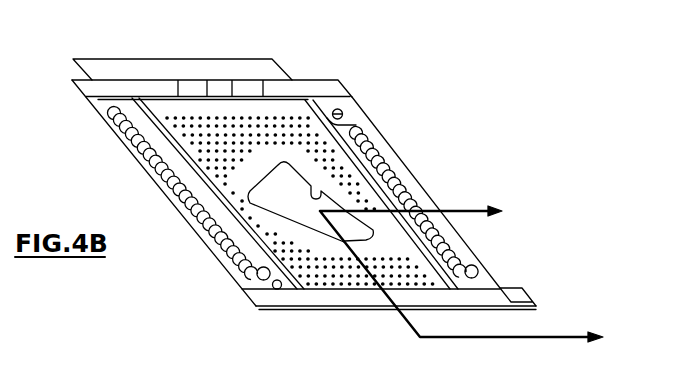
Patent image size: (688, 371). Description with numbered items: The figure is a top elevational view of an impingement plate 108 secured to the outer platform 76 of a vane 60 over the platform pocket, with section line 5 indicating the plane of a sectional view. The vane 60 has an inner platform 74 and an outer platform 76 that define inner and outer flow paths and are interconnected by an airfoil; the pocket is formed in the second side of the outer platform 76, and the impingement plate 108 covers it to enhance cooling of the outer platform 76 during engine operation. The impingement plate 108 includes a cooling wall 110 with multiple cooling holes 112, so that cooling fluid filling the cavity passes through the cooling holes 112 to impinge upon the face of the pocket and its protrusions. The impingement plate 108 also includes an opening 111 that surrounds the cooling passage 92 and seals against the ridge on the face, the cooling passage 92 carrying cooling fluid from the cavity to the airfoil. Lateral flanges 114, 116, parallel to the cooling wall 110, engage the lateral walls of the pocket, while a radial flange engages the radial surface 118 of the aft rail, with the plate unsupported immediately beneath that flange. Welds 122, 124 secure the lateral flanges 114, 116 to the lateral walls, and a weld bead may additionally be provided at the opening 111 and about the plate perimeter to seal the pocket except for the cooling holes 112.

The vane 60 is at (466, 117).
The inner platform 74 is at (258, 72).
The outer platform 76 is at (500, 263).
The cooling passage 92 is at (362, 131).
The impingement plate 108 is at (354, 117).
The cooling wall 110 is at (233, 190).
The opening 111 is at (285, 195).
The cooling holes 112 is at (208, 153).
The lateral flange 114 is at (140, 120).
The lateral flange 116 is at (390, 194).
The radial surface 118 is at (281, 290).
The weld 122 is at (182, 202).
The weld 124 is at (455, 246).
The section line 5- 5 is at (461, 261).